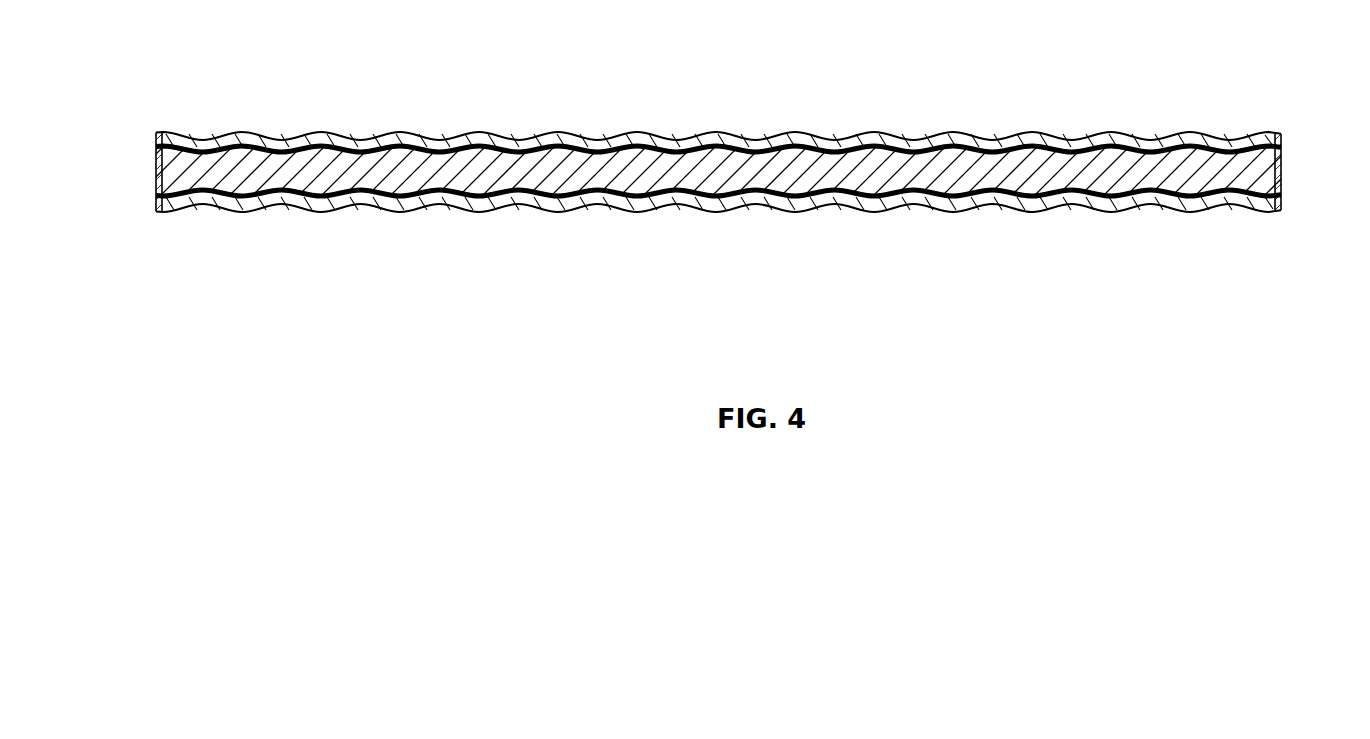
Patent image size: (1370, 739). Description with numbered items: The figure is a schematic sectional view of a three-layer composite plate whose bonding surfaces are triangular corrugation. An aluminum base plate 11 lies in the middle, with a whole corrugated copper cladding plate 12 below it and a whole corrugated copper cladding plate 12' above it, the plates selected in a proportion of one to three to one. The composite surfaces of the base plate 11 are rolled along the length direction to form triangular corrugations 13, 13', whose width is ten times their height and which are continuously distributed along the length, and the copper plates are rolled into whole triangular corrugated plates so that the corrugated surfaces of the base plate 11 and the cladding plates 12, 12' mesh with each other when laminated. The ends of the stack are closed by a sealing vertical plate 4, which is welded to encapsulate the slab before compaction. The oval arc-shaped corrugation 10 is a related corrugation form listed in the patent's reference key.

The oval arc-shaped corrugation 10 is at (733, 346).
The vertical plate 4 is at (173, 133).
The base plate 11 is at (670, 173).
The cladding plate 12 is at (718, 247).
The cladding plate 12' is at (718, 88).
The triangular corrugation 13 is at (718, 254).
The triangular corrugation 13' is at (718, 94).